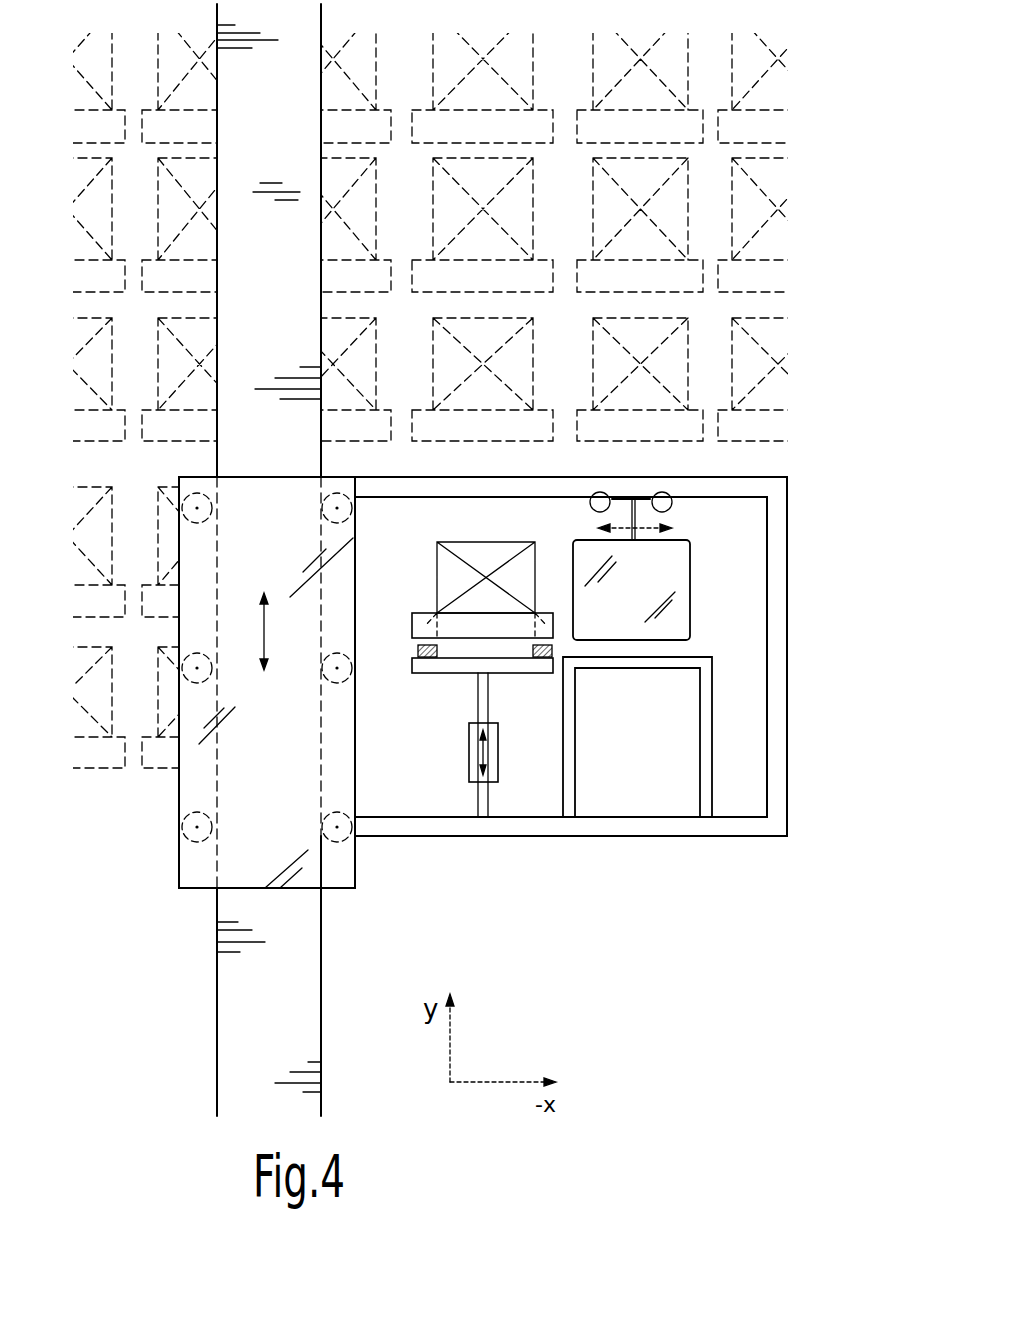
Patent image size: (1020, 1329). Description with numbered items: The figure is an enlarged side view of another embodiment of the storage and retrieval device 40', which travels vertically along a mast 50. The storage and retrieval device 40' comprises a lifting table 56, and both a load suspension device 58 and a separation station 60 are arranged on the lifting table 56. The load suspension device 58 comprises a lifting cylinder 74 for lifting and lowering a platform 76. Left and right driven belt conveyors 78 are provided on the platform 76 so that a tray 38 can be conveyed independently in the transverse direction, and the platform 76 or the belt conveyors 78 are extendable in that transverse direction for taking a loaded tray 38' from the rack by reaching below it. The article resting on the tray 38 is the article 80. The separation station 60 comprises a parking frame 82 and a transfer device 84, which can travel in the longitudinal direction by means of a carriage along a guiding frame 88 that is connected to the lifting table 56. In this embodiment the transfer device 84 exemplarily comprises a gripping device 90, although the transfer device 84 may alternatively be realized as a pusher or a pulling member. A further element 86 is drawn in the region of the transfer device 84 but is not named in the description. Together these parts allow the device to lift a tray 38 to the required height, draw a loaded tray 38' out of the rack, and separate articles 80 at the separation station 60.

The loaded tray 38' is at (482, 225).
The storage and retrieval device 40' is at (422, 492).
The mast 50 is at (217, 997).
The load suspension device 58 is at (431, 844).
The lifting table 56 is at (735, 836).
The guiding frame 88 is at (787, 688).
The article 80 is at (462, 540).
The tray 38 is at (455, 595).
The belt conveyors 78 is at (418, 651).
The platform 76 is at (513, 673).
The lifting cylinder 74 is at (468, 755).
The coupling 86 is at (636, 488).
The transfer device 84 is at (705, 535).
The gripping device 90 is at (690, 598).
The separation station 60 is at (651, 772).
The parking frame 82 is at (575, 716).